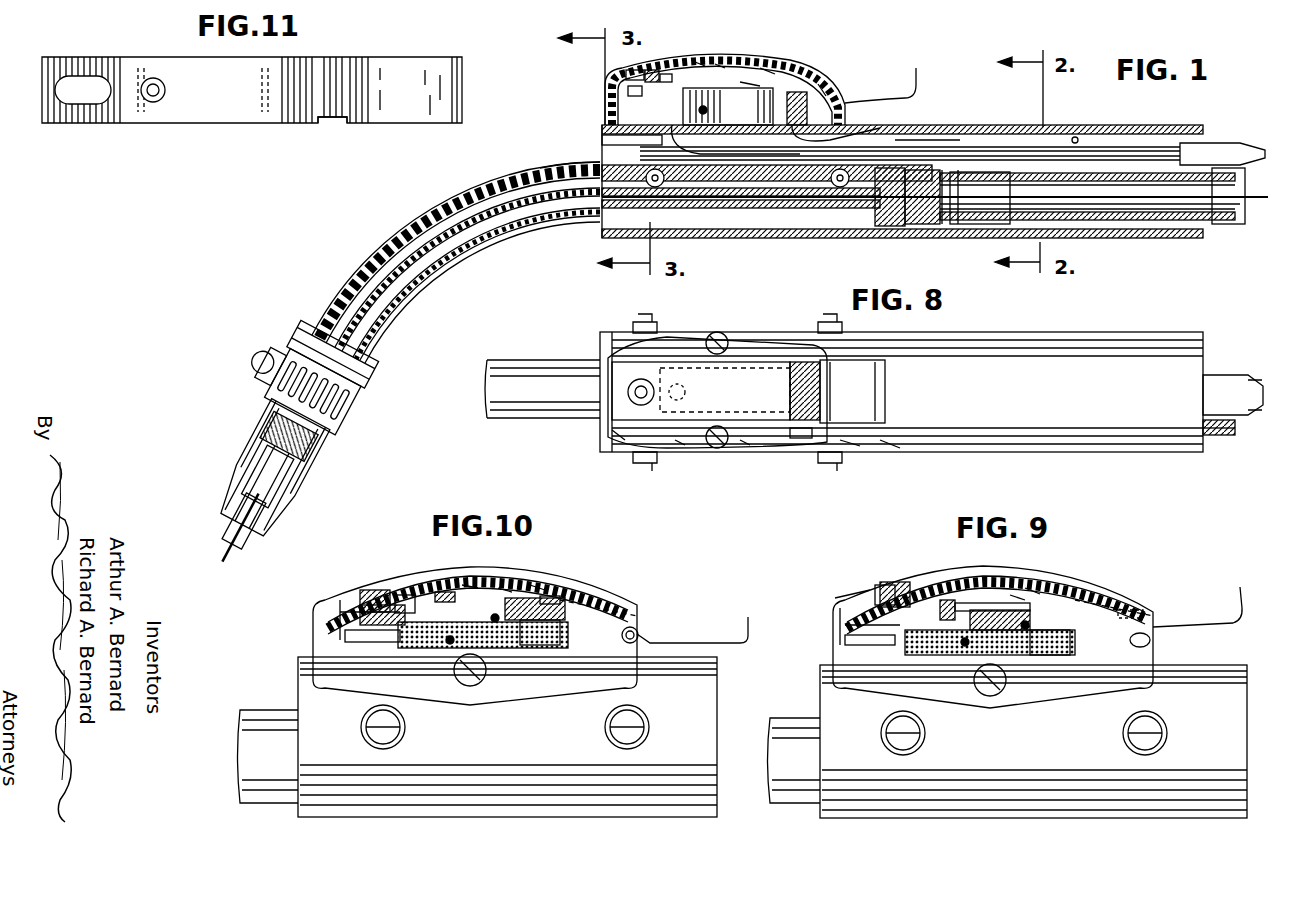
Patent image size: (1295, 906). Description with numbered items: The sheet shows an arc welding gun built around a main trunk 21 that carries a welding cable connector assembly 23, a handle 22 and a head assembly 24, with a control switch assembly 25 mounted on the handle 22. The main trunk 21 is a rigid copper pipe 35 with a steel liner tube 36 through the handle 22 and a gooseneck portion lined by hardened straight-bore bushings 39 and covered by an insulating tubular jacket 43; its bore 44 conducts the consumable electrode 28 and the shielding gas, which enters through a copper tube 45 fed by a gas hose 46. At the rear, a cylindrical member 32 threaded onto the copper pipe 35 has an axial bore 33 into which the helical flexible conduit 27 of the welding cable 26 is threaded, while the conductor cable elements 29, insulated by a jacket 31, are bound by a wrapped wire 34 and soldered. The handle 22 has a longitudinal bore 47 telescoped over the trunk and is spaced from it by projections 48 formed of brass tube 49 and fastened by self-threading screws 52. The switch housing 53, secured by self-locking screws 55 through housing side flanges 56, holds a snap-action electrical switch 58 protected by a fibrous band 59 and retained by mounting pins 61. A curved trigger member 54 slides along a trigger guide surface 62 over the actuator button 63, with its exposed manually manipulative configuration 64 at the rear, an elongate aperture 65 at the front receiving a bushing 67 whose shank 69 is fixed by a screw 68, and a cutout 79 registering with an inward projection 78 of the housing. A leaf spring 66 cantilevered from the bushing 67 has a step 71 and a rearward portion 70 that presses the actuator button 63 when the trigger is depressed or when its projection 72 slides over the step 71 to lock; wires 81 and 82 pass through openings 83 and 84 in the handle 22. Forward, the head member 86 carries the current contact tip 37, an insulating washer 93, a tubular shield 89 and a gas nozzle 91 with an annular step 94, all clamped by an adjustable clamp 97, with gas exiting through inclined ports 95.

In FIG. 1, the main trunk 21 is at (528, 160).
In FIG. 8, the main trunk 21 is at (545, 360).
In FIG. 10, the main trunk 21 is at (275, 710).
In FIG. 9, the main trunk 21 is at (800, 718).
In FIG. 1, the handle 22 is at (985, 125).
In FIG. 8, the handle 22 is at (1105, 342).
In FIG. 10, the handle 22 is at (717, 695).
In FIG. 9, the handle 22 is at (1225, 680).
In FIG. 1, the welding cable connector assembly 23 is at (985, 222).
In FIG. 1, the head assembly 24 is at (232, 437).
In FIG. 1, the control switch assembly 25 is at (832, 78).
In FIG. 10, the control switch assembly 25 is at (600, 600).
In FIG. 9, the control switch assembly 25 is at (1092, 595).
In FIG. 1, the welding cable 26 is at (1220, 226).
In FIG. 8, the welding cable 26 is at (1245, 376).
In FIG. 1, the flexible conduit 27 is at (1100, 220).
In FIG. 1, the consumable electrode 28 is at (1255, 200).
In FIG. 1, the conductor cable elements 29 is at (1080, 222).
In FIG. 1, the jacket 31 is at (1000, 185).
In FIG. 1, the cylindrical member 32 is at (890, 222).
In FIG. 1, the axial bore 33 is at (950, 222).
In FIG. 1, the wire 34 is at (930, 222).
In FIG. 1, the copper pipe 35 is at (448, 258).
In FIG. 1, the steel liner tube 36 is at (735, 208).
In FIG. 1, the current contact tip 37 is at (268, 540).
In FIG. 1, the straight-bore bushings 39 is at (480, 182).
In FIG. 1, the tubular jacket 43 is at (402, 225).
In FIG. 1, the bore 44 is at (493, 240).
In FIG. 1, the copper tube 45 is at (1130, 150).
In FIG. 1, the gas hose 46 is at (1236, 145).
In FIG. 8, the gas hose 46 is at (1225, 377).
In FIG. 1, the longitudinal bore 47 is at (1075, 138).
In FIG. 1, the projections 48 is at (662, 186).
In FIG. 1, the brass tube 49 is at (640, 162).
In FIG. 8, the self-threading screws 52 is at (648, 320).
In FIG. 10, the self-threading screws 52 is at (383, 750).
In FIG. 9, the self-threading screws 52 is at (903, 756).
In FIG. 1, the housing 53 is at (770, 70).
In FIG. 8, the housing 53 is at (835, 365).
In FIG. 10, the housing 53 is at (536, 586).
In FIG. 11, the trigger member 54 is at (243, 105).
In FIG. 1, the trigger member 54 is at (822, 88).
In FIG. 8, the trigger member 54 is at (890, 385).
In FIG. 10, the trigger member 54 is at (505, 590).
In FIG. 9, the trigger member 54 is at (1020, 598).
In FIG. 8, the self-locking screws 55 is at (717, 332).
In FIG. 10, the self-locking screws 55 is at (475, 688).
In FIG. 9, the self-locking screws 55 is at (993, 697).
In FIG. 8, the housing side flanges 56 is at (760, 350).
In FIG. 10, the housing side flanges 56 is at (530, 690).
In FIG. 9, the housing side flanges 56 is at (1035, 690).
In FIG. 1, the snap-action electrical switch 58 is at (605, 105).
In FIG. 8, the snap-action electrical switch 58 is at (745, 340).
In FIG. 10, the snap-action electrical switch 58 is at (596, 607).
In FIG. 9, the snap-action electrical switch 58 is at (1100, 598).
In FIG. 1, the band 59 is at (810, 100).
In FIG. 8, the band 59 is at (795, 335).
In FIG. 10, the band 59 is at (560, 655).
In FIG. 9, the band 59 is at (1060, 650).
In FIG. 1, the mounting pins 61 is at (728, 106).
In FIG. 10, the mounting pins 61 is at (450, 648).
In FIG. 9, the mounting pins 61 is at (960, 645).
In FIG. 1, the trigger guide surface 62 is at (668, 76).
In FIG. 10, the trigger guide surface 62 is at (470, 585).
In FIG. 1, the actuator button 63 is at (745, 85).
In FIG. 8, the actuator button 63 is at (745, 445).
In FIG. 10, the actuator button 63 is at (548, 594).
In FIG. 9, the actuator button 63 is at (1035, 590).
In FIG. 11, the manually manipulative configuration 64 is at (400, 50).
In FIG. 1, the manually manipulative configuration 64 is at (905, 88).
In FIG. 8, the manually manipulative configuration 64 is at (880, 440).
In FIG. 10, the manually manipulative configuration 64 is at (705, 640).
In FIG. 9, the manually manipulative configuration 64 is at (1212, 620).
In FIG. 11, the elongate aperture 65 is at (95, 78).
In FIG. 8, the elongate aperture 65 is at (612, 440).
In FIG. 9, the elongate aperture 65 is at (866, 592).
In FIG. 8, the leaf spring 66 is at (680, 445).
In FIG. 10, the leaf spring 66 is at (385, 585).
In FIG. 9, the leaf spring 66 is at (905, 582).
In FIG. 1, the bushing 67 is at (652, 70).
In FIG. 8, the bushing 67 is at (630, 395).
In FIG. 10, the bushing 67 is at (360, 588).
In FIG. 9, the bushing 67 is at (880, 585).
In FIG. 1, the screw 68 is at (628, 92).
In FIG. 10, the screw 68 is at (345, 635).
In FIG. 9, the screw 68 is at (845, 640).
In FIG. 1, the shank 69 is at (626, 75).
In FIG. 10, the shank 69 is at (340, 612).
In FIG. 9, the shank 69 is at (845, 625).
In FIG. 10, the rearward portion of the leaf spring 70 is at (490, 645).
In FIG. 9, the rearward portion of the leaf spring 70 is at (990, 603).
In FIG. 1, the step 71 is at (700, 64).
In FIG. 10, the step 71 is at (428, 640).
In FIG. 9, the step 71 is at (925, 645).
In FIG. 11, the projection 72 is at (153, 102).
In FIG. 1, the projection 72 is at (720, 66).
In FIG. 8, the projection 72 is at (678, 340).
In FIG. 10, the projection 72 is at (445, 590).
In FIG. 9, the projection 72 is at (950, 600).
In FIG. 8, the inward projection 78 is at (855, 445).
In FIG. 9, the inward projection 78 is at (1152, 641).
In FIG. 11, the cutout 79 is at (334, 120).
In FIG. 8, the cutout 79 is at (808, 440).
In FIG. 10, the cutout 79 is at (640, 634).
In FIG. 9, the cutout 79 is at (1140, 612).
In FIG. 1, the wire 81 is at (692, 153).
In FIG. 8, the wire 81 is at (1215, 436).
In FIG. 1, the wire 82 is at (905, 140).
In FIG. 8, the wire 82 is at (1235, 432).
In FIG. 1, the opening 83 is at (602, 139).
In FIG. 1, the opening 84 is at (850, 135).
In FIG. 1, the head member 86 is at (325, 472).
In FIG. 1, the tubular shield 89 is at (240, 465).
In FIG. 1, the gas nozzle 91 is at (298, 497).
In FIG. 1, the washer 93 is at (300, 345).
In FIG. 1, the annular step 94 is at (222, 507).
In FIG. 1, the ports 95 is at (262, 430).
In FIG. 1, the adjustable clamp 97 is at (368, 420).